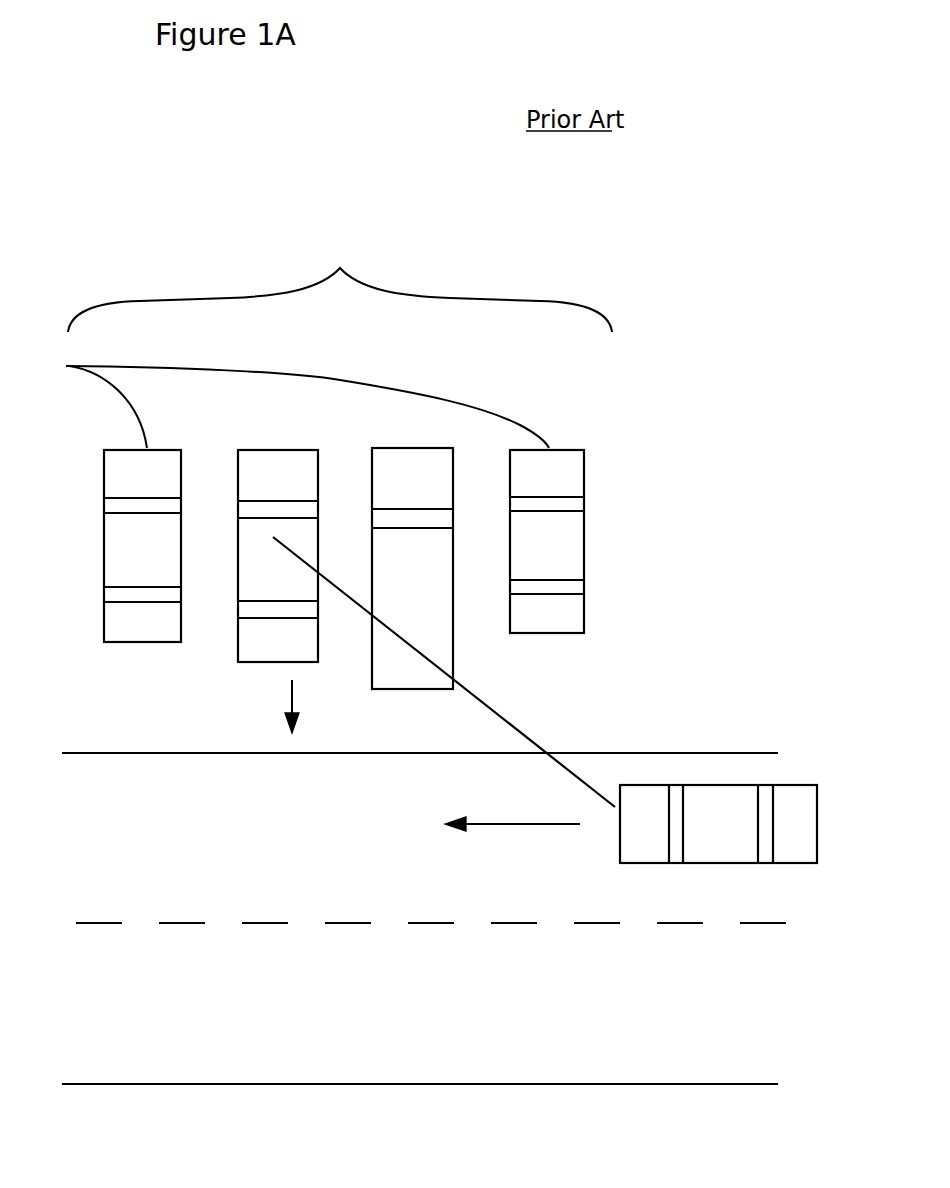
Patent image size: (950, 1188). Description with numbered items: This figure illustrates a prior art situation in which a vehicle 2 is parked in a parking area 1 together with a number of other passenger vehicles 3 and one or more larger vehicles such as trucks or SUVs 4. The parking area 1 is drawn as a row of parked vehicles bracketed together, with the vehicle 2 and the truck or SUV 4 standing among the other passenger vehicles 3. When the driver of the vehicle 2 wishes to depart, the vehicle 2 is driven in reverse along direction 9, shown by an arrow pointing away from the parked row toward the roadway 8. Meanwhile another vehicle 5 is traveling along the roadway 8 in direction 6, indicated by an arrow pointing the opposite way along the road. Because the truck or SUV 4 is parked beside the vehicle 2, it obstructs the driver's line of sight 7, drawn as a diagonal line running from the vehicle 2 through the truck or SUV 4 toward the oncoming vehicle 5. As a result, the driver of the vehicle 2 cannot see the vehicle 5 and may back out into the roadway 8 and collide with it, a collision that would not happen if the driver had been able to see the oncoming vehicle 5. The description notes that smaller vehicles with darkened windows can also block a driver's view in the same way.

The parking area 1 is at (340, 419).
The vehicle 2 is at (273, 663).
The passenger vehicles 3 is at (290, 399).
The truck or SUV 4 is at (453, 653).
The vehicle 5 is at (731, 857).
The direction 6 is at (497, 824).
The line of sight 7 is at (472, 698).
The roadway 8 is at (210, 1084).
The direction 9 is at (293, 690).